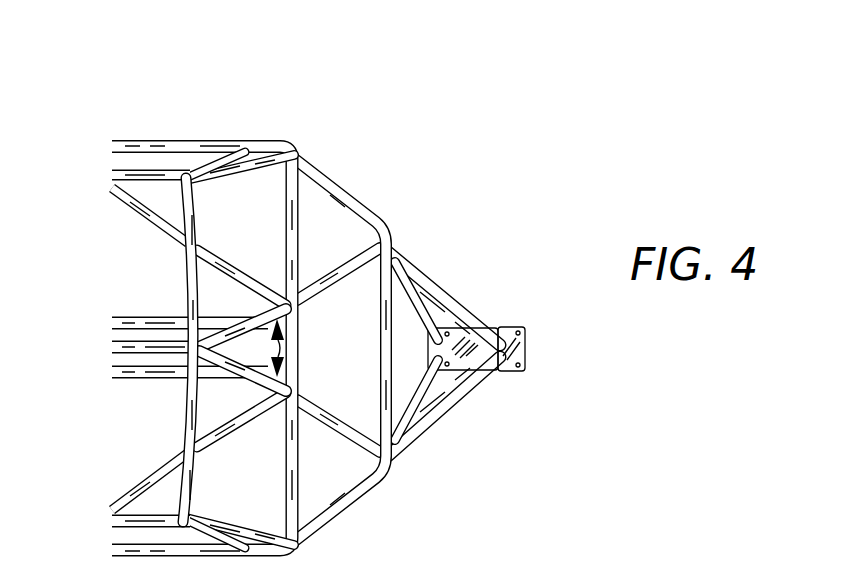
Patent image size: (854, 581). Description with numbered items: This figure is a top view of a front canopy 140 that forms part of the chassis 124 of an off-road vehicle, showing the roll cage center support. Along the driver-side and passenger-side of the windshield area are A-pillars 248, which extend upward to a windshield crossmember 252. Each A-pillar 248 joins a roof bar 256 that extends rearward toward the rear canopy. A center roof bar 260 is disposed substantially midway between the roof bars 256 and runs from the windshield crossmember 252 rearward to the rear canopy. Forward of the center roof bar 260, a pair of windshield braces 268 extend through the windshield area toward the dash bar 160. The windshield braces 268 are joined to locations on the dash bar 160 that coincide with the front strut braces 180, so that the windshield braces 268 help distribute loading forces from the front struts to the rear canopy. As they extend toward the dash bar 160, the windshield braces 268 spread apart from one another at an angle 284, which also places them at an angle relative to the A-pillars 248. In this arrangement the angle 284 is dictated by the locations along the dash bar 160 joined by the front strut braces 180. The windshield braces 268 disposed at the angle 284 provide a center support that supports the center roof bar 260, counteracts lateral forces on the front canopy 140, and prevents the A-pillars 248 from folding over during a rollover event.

The chassis 124 is at (167, 70).
The front canopy 140 is at (281, 100).
The roof bar 256 is at (135, 172).
The A-pillar 248 is at (292, 170).
The windshield brace 268 is at (235, 320).
The dash bar 160 is at (297, 237).
The front strut brace 180 is at (353, 270).
The windshield crossmember 252 is at (188, 275).
The center roof bar 260 is at (145, 350).
The angle 284 is at (282, 350).